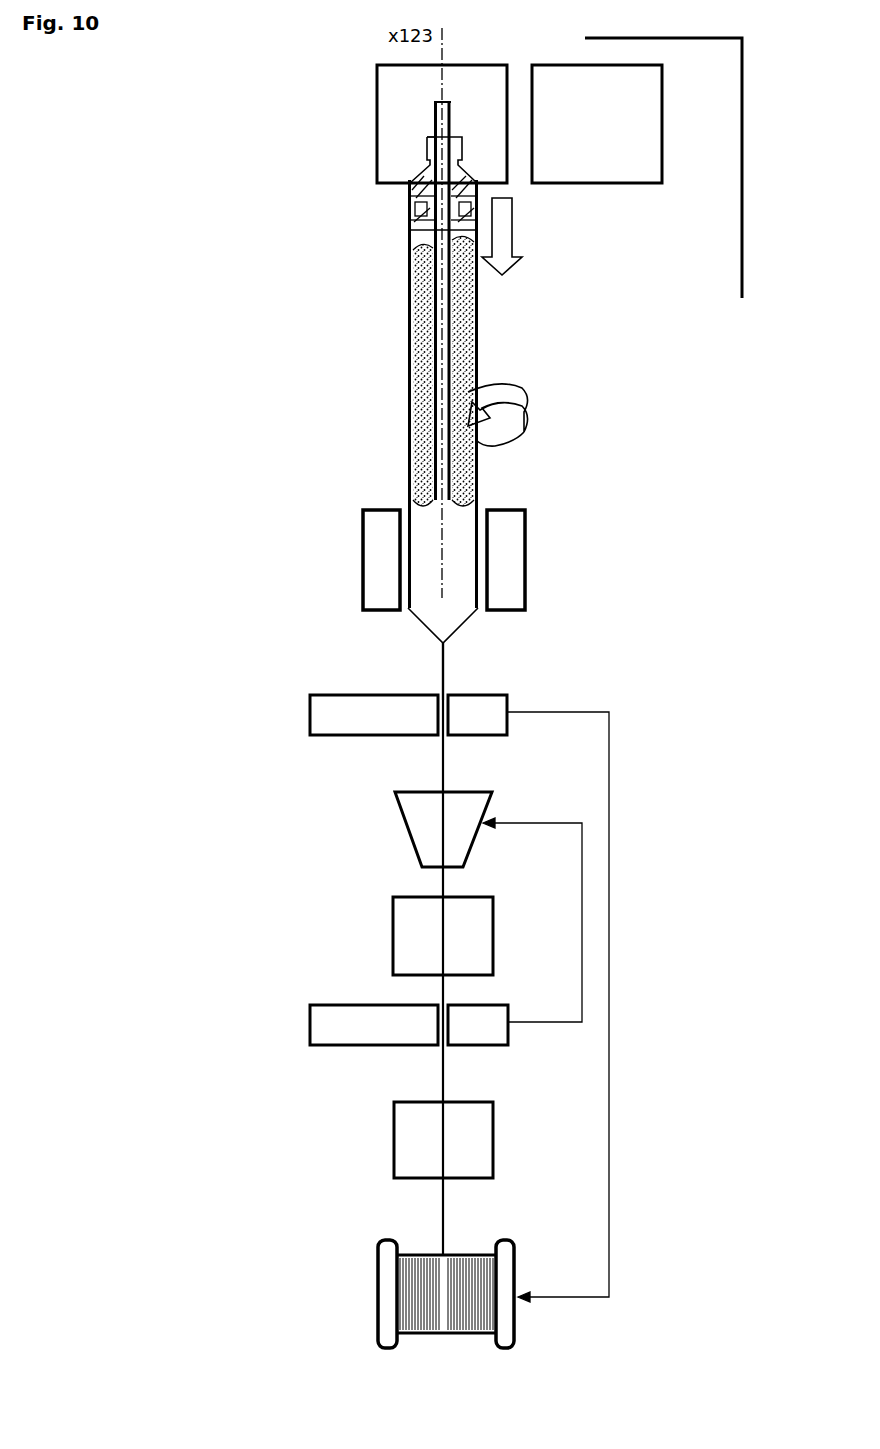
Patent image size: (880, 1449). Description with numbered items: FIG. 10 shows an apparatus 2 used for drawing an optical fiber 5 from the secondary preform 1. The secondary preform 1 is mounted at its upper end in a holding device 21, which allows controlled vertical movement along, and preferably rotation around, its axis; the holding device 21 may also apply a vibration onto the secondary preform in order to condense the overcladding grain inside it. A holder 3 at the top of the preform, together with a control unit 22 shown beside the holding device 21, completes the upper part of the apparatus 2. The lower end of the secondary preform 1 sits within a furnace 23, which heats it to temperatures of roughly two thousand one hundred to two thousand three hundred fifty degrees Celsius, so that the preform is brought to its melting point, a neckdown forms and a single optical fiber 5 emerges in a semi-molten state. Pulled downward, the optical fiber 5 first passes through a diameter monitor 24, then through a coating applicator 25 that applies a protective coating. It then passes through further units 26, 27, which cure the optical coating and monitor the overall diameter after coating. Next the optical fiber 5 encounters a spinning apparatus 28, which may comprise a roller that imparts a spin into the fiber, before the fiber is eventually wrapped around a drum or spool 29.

The secondary preform 1 is at (408, 376).
The fiber drawing apparatus 2 is at (663, 168).
The holder / chuck 3 is at (427, 180).
The optical fiber 5 is at (445, 673).
The holding device 21 is at (442, 124).
The control unit 22 is at (597, 124).
The furnace 23 is at (378, 563).
The diameter monitor 24 is at (378, 700).
The coating applicator 25 is at (378, 830).
The curing unit 26 is at (378, 927).
The diameter monitoring unit 27 is at (378, 1012).
The spinning apparatus 28 is at (378, 1150).
The spool 29 is at (378, 1272).